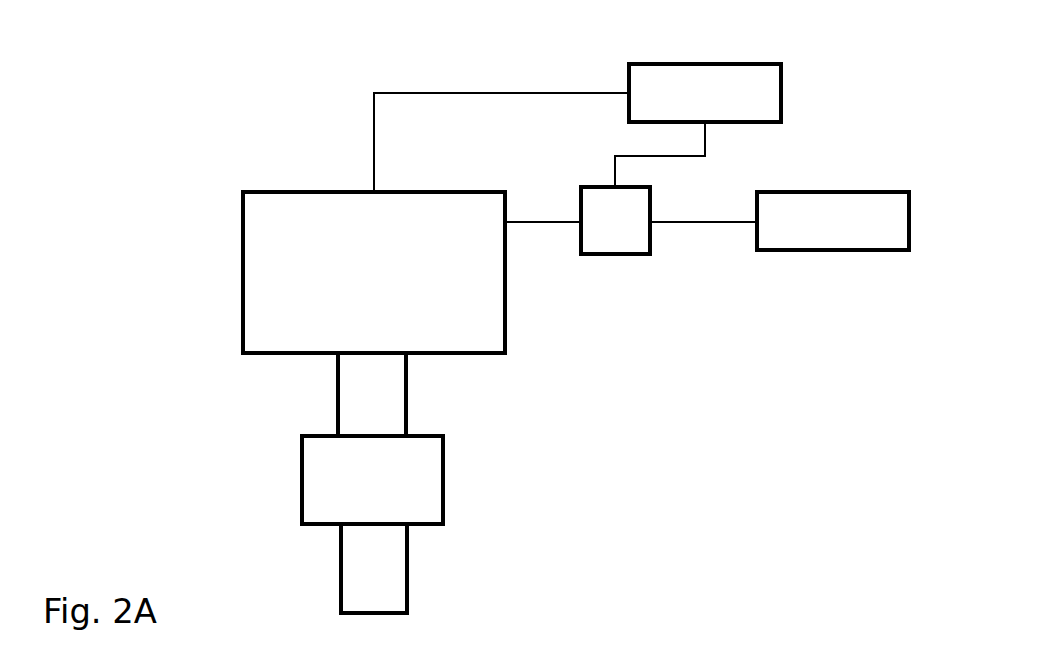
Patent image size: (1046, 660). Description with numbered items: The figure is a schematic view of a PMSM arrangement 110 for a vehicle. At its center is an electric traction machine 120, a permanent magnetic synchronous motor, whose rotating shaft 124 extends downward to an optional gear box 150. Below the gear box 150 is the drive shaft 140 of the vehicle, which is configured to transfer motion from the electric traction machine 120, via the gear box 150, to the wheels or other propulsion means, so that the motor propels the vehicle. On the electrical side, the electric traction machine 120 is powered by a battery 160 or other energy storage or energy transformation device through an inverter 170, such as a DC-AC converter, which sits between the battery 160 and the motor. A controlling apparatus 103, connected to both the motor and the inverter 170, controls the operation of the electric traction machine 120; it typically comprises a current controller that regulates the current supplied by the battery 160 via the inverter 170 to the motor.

The PMSM arrangement 110 is at (162, 72).
The controlling apparatus 103 is at (628, 80).
The electric traction machine 120 is at (337, 192).
The rotating shaft 124 is at (406, 412).
The gear box 150 is at (301, 460).
The drive shaft 140 is at (341, 585).
The inverter 170 is at (615, 254).
The battery 160 is at (832, 250).